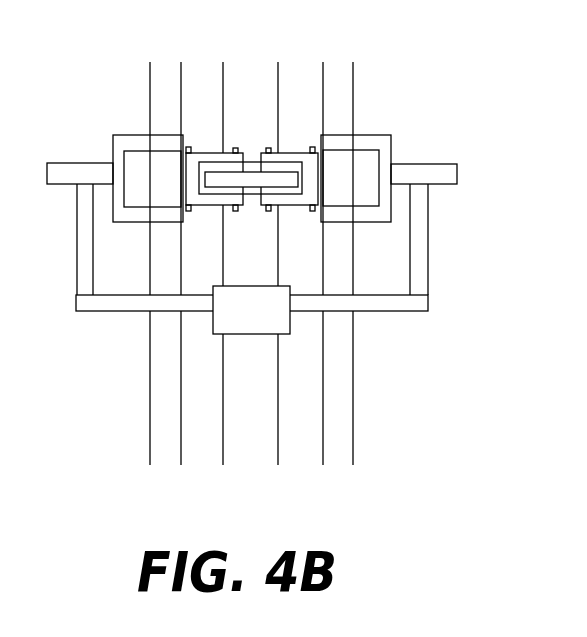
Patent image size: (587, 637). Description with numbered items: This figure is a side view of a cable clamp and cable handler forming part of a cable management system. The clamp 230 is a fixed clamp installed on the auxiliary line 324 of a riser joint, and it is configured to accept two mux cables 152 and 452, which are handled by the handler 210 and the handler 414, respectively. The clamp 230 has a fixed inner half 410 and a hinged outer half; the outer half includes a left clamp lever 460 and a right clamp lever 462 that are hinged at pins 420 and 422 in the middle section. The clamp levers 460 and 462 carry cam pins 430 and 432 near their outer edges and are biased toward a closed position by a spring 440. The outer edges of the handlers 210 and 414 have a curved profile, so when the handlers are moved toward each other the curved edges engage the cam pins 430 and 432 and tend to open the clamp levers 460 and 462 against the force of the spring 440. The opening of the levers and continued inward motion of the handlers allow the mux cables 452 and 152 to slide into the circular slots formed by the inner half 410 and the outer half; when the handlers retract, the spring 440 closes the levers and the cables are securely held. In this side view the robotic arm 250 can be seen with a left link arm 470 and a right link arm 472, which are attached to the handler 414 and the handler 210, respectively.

The mux cable 152 is at (343, 370).
The handler 210 is at (386, 147).
The clamp 230 is at (258, 100).
The robotic arm 250 is at (243, 334).
The auxiliary line 324 is at (223, 442).
The inner half 410 is at (288, 277).
The handler 414 is at (123, 140).
The pin 420 is at (236, 210).
The pin 422 is at (267, 208).
The cam pin 430 is at (187, 146).
The cam pin 432 is at (313, 145).
The spring 440 is at (250, 190).
The mux cable 452 is at (158, 377).
The left clamp lever 460 is at (204, 152).
The right clamp lever 462 is at (298, 152).
The left link arm 470 is at (80, 228).
The right link arm 472 is at (428, 258).